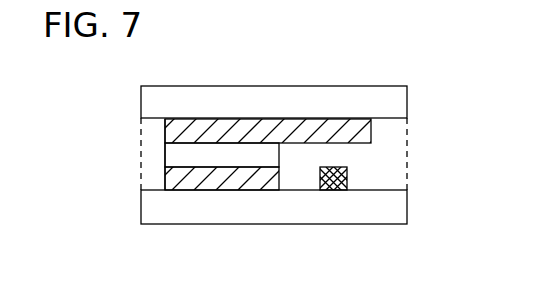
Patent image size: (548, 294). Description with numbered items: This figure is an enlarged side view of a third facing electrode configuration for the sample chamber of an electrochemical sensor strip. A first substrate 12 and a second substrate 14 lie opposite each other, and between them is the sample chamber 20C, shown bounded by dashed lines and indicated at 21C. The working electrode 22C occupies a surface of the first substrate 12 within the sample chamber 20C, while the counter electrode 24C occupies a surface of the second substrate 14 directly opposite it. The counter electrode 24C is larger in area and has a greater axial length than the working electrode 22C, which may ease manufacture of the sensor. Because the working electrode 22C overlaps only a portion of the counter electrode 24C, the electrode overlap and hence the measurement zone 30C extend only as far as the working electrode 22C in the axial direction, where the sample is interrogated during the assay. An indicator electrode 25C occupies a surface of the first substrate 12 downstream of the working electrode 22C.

The second substrate 14 is at (349, 86).
The first substrate 12 is at (324, 224).
The cell region 21C is at (130, 153).
The counter electrode 24C is at (371, 128).
The working electrode 22C is at (292, 190).
The measurement zone 30C is at (182, 153).
The sample chamber 20C is at (155, 133).
The indicator electrode 25C is at (347, 178).